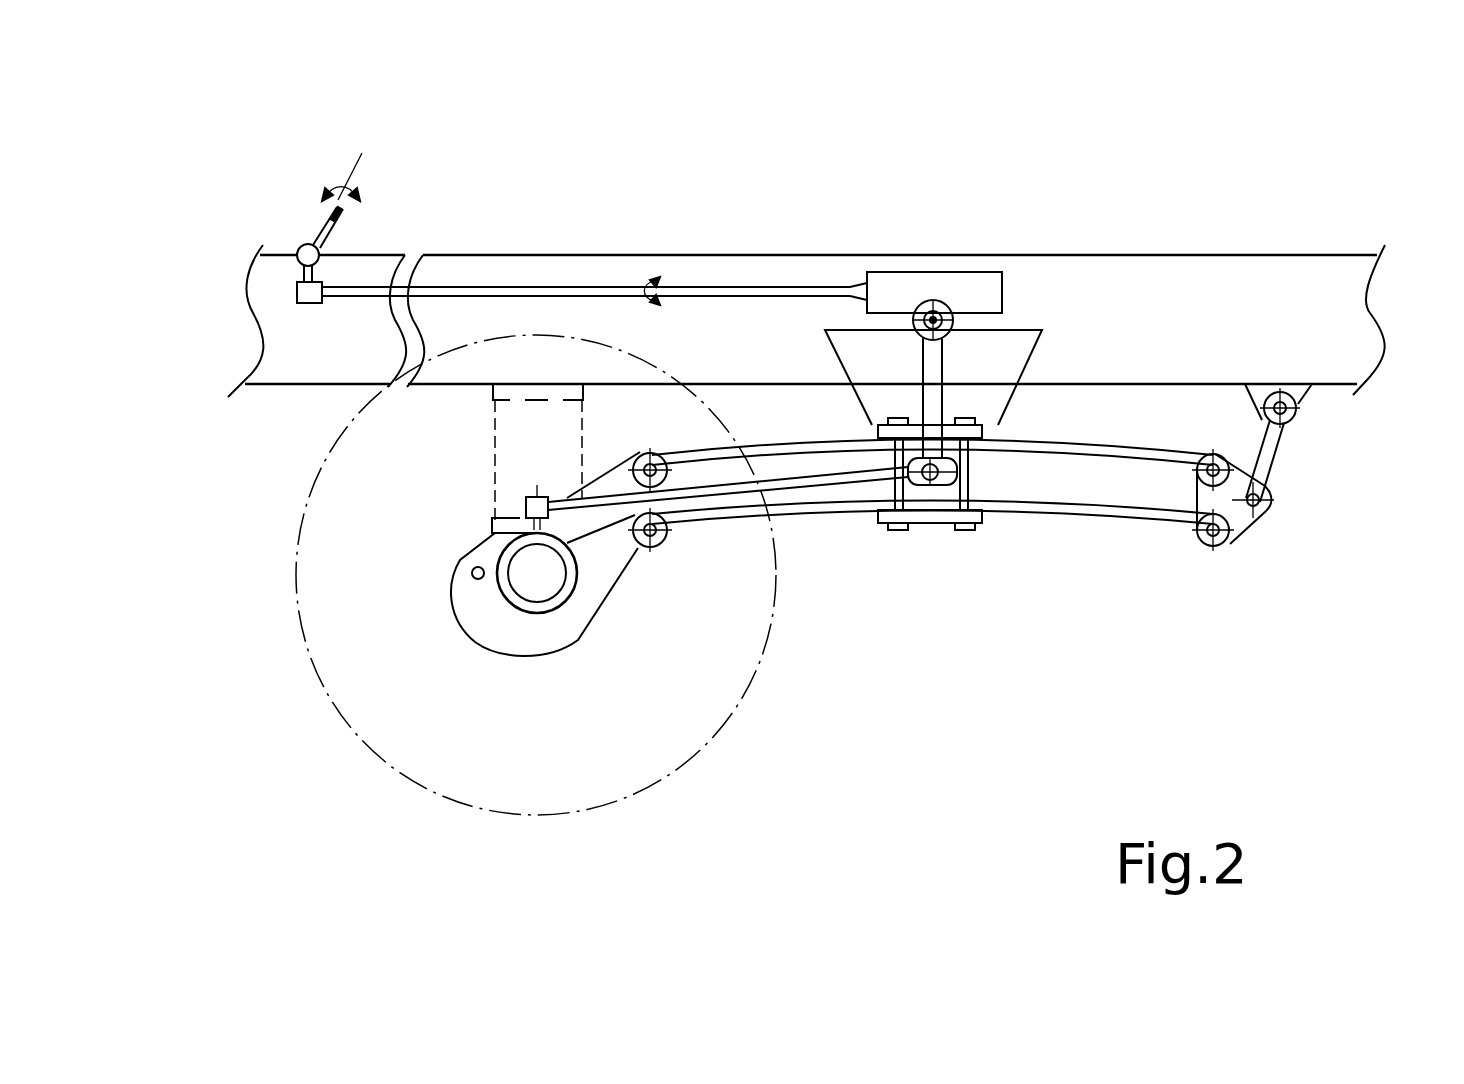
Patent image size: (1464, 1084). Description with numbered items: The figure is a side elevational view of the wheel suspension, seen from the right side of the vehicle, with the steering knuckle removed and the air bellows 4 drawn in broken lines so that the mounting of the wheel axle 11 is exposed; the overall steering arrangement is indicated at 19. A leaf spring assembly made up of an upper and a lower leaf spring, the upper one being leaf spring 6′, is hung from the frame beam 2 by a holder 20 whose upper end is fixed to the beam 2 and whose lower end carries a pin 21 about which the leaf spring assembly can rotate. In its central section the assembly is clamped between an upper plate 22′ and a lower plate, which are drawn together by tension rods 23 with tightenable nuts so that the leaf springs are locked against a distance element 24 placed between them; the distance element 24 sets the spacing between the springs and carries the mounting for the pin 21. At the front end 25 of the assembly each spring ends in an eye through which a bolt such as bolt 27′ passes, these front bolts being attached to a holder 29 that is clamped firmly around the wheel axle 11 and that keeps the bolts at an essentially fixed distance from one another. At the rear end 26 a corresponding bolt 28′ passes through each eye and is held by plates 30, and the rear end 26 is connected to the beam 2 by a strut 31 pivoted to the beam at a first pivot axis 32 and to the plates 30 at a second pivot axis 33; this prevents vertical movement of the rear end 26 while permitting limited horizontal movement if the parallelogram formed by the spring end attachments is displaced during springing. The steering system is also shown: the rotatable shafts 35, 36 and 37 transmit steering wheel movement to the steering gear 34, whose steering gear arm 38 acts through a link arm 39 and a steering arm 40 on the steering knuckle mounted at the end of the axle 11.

The beam 2 is at (1182, 275).
The air bellows 4 is at (493, 460).
The leaf spring 6′ is at (1068, 452).
The wheel axle 11 is at (528, 607).
The steering mechanism 19 is at (1103, 160).
The holder 20 is at (990, 362).
The pin 21 is at (923, 527).
The upper plate 22′ is at (868, 492).
The tension rod 23 is at (970, 527).
The distance element 24 is at (945, 525).
The front end 25 is at (622, 442).
The rear end 26 is at (1250, 570).
The bolt 27′ is at (668, 487).
The bolt 28′ is at (1200, 513).
The holder 29 is at (552, 627).
The plates 30 is at (1245, 530).
The strut 31 is at (1282, 463).
The first pivot axis 32 is at (1290, 420).
The second pivot axis 33 is at (1275, 513).
The steering gear 34 is at (918, 288).
The rotatable shaft 35 is at (323, 227).
The rotatable shaft 36 is at (303, 275).
The rotatable shaft 37 is at (530, 287).
The steering gear arm 38 is at (927, 385).
The link arm 39 is at (803, 490).
The steering arm 40 is at (526, 508).